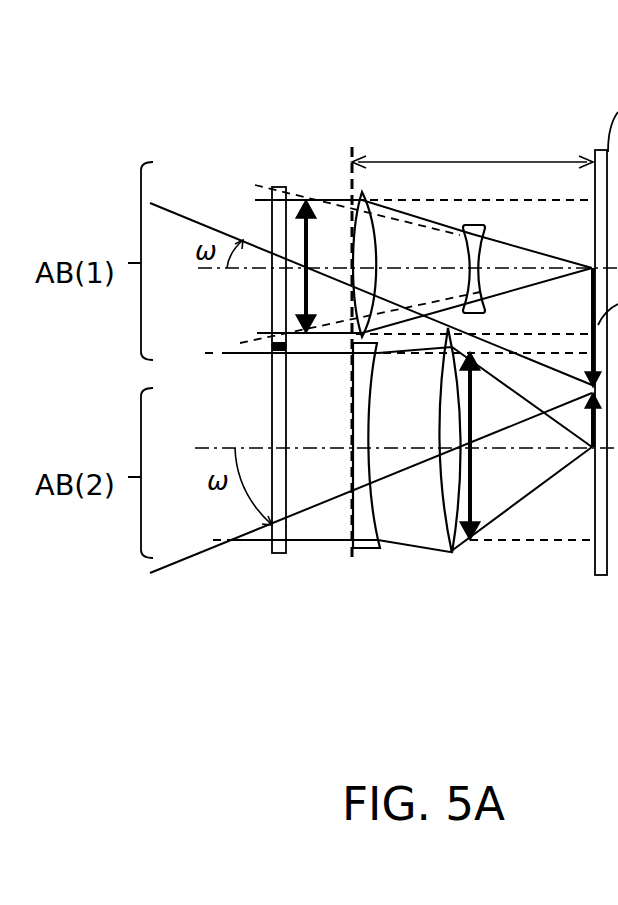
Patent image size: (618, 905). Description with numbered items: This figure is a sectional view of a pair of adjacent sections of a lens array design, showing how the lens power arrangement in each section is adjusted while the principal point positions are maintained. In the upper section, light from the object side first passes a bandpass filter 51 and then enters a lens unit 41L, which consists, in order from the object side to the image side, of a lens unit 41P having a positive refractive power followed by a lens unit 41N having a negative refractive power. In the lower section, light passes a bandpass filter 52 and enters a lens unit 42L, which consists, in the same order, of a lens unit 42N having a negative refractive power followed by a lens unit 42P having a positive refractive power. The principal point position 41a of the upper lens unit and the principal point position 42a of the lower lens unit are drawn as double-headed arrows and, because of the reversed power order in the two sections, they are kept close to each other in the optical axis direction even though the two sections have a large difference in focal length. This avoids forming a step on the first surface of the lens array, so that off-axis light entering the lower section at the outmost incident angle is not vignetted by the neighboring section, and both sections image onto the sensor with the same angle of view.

The bandpass filter 51 is at (277, 186).
The bandpass filter 52 is at (280, 553).
The principal point position 41a is at (304, 198).
The lens unit 41L is at (437, 177).
The lens unit having a positive refractive power 41P is at (368, 205).
The lens unit having a negative refractive power 41N is at (477, 223).
The lens unit 42L is at (423, 535).
The lens unit having a negative refractive power 42N is at (373, 550).
The lens unit having a positive refractive power 42P is at (450, 553).
The principal point position 42a is at (472, 538).